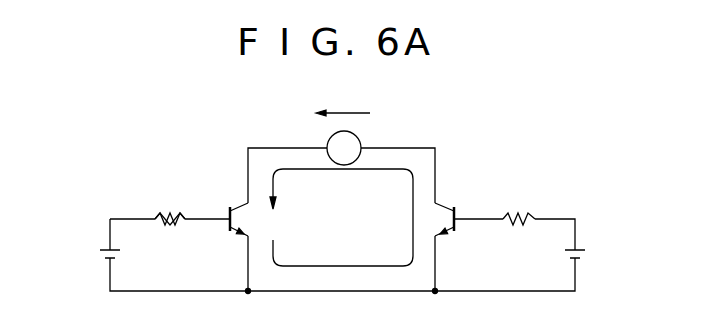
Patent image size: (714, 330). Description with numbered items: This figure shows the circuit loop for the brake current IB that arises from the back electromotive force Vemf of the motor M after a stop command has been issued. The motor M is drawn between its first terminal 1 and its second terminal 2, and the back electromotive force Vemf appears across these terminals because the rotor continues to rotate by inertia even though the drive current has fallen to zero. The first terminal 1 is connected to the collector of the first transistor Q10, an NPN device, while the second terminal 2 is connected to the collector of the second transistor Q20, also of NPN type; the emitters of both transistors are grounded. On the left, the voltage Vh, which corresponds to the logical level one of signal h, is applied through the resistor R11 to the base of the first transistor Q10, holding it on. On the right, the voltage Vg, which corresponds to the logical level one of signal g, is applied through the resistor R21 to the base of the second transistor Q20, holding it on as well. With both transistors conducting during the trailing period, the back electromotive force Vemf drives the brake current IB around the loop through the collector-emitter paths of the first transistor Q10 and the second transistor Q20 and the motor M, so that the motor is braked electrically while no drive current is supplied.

The voltage Vh is at (100, 254).
The voltage Vg is at (588, 257).
The resistor R11 is at (160, 212).
The resistor R21 is at (520, 212).
The first transistor Q10 is at (242, 204).
The second transistor Q20 is at (440, 205).
The motor M is at (344, 148).
The first terminal 1 is at (314, 137).
The second terminal 2 is at (371, 137).
The back electromotive force Vemf is at (342, 101).
The brake current IB is at (341, 217).